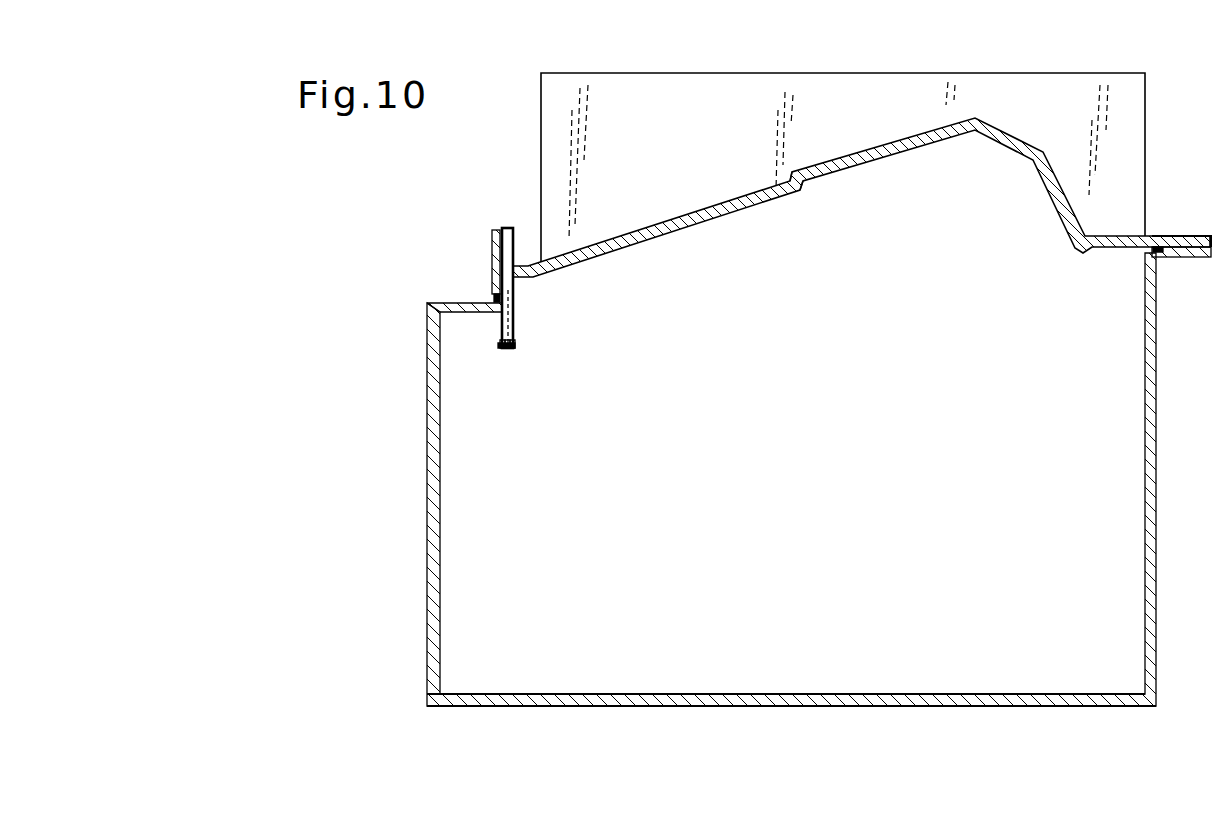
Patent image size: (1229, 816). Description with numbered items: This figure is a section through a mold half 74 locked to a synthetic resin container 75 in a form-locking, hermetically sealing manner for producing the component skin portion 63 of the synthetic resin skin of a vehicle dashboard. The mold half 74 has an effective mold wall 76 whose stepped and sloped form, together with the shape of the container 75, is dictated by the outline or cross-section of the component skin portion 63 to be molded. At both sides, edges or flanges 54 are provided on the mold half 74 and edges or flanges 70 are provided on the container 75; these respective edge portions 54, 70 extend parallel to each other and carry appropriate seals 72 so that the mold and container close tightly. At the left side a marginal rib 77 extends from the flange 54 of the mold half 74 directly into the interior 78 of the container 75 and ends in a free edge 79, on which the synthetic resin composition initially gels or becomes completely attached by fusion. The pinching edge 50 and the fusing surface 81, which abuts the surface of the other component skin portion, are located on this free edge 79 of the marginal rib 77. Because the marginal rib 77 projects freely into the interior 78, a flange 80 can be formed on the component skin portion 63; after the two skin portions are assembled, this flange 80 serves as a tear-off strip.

The pinching edge 50 is at (508, 348).
The edge portion or flange of the mold half 54 is at (508, 225).
The component skin portion 63 is at (732, 217).
The edge portion or flange of the container 70 is at (492, 240).
The seal 72 is at (495, 293).
The mold half 74 is at (718, 103).
The container 75 is at (722, 700).
The effective mold wall 76 is at (822, 165).
The marginal rib 77 is at (515, 319).
The interior of the container 78 is at (770, 655).
The free edge of the marginal rib 79 is at (513, 348).
The flange 80 is at (460, 303).
The fusing surface 81 is at (497, 348).